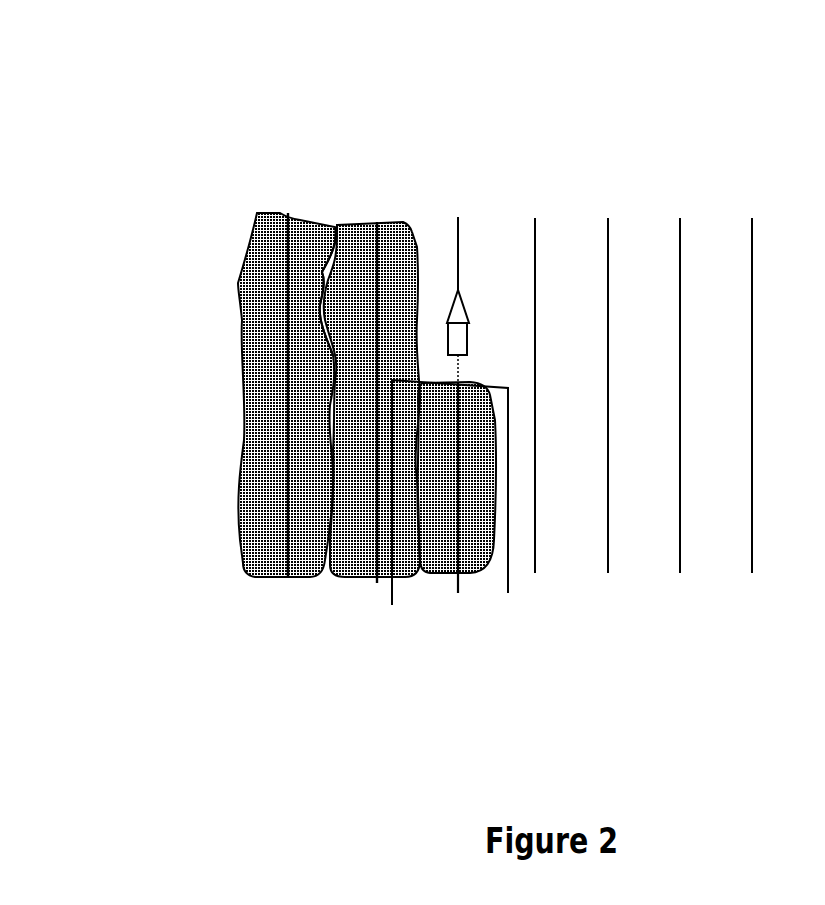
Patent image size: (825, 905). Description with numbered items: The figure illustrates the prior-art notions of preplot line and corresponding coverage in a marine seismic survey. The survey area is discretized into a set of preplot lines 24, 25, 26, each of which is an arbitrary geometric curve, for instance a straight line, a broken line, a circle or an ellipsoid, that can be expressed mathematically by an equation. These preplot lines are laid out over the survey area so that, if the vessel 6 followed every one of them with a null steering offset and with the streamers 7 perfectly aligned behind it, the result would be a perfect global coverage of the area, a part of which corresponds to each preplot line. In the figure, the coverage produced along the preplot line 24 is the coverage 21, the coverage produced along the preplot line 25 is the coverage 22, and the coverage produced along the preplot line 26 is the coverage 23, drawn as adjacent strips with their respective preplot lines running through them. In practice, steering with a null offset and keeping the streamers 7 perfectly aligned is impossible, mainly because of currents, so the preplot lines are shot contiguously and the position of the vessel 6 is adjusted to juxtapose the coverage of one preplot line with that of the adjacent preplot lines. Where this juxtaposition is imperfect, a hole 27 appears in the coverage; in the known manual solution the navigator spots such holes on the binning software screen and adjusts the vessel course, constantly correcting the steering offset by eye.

The vessel 6 is at (468, 302).
The streamers 7 is at (515, 590).
The coverage 21 is at (247, 563).
The coverage 22 is at (355, 573).
The coverage 23 is at (602, 713).
The preplot line 24 is at (285, 260).
The preplot line 25 is at (378, 245).
The preplot line 26 is at (455, 245).
The hole 27 is at (322, 272).